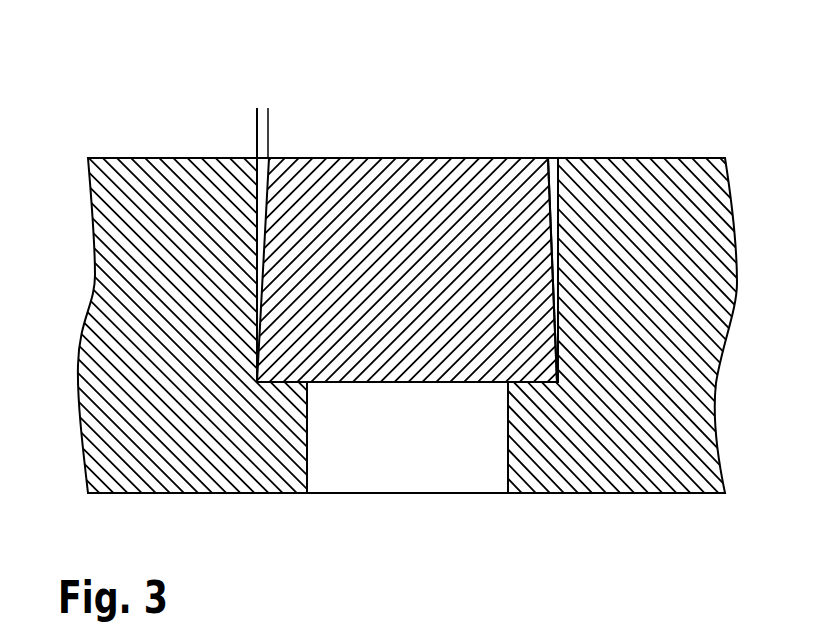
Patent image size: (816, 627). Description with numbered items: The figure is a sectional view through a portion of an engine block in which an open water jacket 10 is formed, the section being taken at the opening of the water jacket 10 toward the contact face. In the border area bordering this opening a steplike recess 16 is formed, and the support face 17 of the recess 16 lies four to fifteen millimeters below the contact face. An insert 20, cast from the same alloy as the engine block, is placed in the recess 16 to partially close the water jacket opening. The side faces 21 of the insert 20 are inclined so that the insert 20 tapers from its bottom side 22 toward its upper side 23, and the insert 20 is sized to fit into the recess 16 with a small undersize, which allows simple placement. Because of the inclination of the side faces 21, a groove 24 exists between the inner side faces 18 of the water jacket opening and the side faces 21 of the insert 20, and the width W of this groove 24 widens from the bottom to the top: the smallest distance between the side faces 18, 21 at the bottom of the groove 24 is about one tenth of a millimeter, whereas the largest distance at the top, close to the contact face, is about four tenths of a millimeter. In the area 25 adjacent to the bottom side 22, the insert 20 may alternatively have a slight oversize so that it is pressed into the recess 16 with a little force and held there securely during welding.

The water jacket 10 is at (175, 158).
The recess 16 is at (283, 437).
The support face 17 is at (537, 380).
The inner side face 18 is at (550, 208).
The insert 20 is at (395, 158).
The side face 21 is at (553, 158).
The bottom side 22 is at (403, 385).
The upper side 23 is at (330, 158).
The groove 24 is at (258, 193).
The area 25 is at (255, 375).
The width of the groove W is at (268, 119).